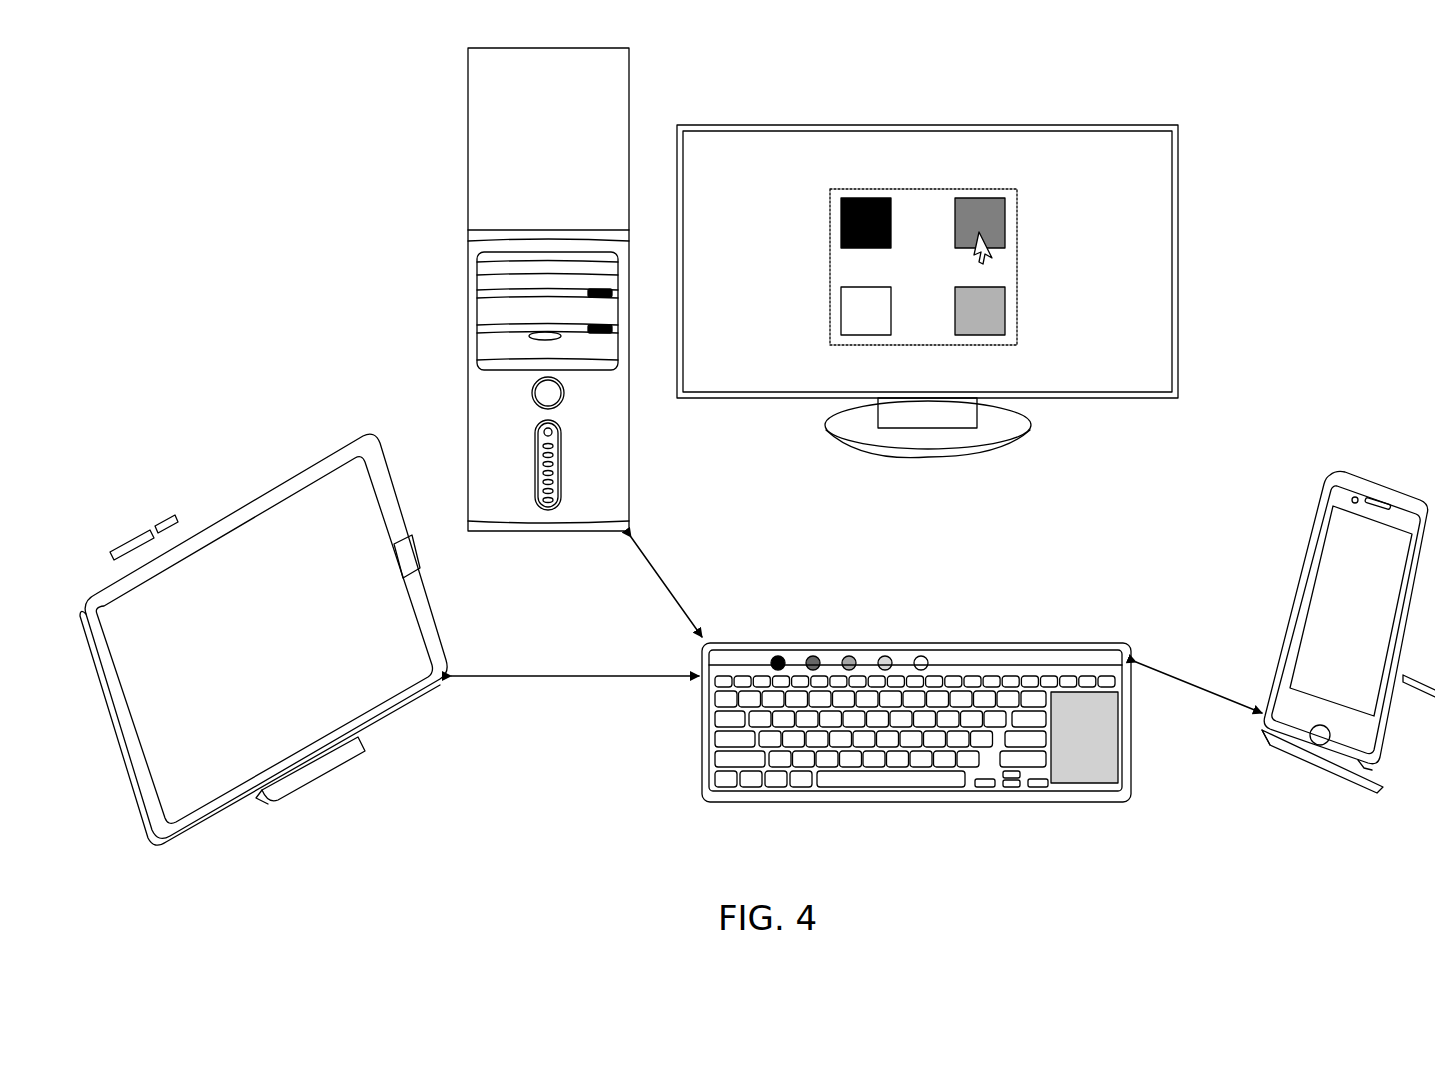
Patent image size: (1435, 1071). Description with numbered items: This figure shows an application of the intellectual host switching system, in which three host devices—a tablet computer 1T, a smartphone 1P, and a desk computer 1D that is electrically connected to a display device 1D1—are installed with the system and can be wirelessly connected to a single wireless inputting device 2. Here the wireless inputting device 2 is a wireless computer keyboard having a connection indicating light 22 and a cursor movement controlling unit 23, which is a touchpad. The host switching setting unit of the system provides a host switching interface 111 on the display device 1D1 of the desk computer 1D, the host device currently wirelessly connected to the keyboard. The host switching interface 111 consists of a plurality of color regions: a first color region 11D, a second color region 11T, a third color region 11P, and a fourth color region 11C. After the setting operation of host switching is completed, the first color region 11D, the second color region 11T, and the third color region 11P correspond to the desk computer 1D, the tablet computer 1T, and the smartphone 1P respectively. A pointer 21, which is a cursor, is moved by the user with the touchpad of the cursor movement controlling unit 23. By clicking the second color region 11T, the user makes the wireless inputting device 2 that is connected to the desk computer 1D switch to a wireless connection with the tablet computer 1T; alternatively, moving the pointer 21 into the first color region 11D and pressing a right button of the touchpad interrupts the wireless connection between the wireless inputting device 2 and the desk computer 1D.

The desk computer 1D is at (462, 231).
The display device 1D1 is at (1163, 122).
The host switching interface 111 is at (828, 262).
The third color region 11P is at (840, 205).
The first color region 11D is at (1005, 205).
The fourth color region 11C is at (840, 320).
The second color region 11T is at (1006, 325).
The pointer 21 is at (992, 262).
The wireless inputting device 2 is at (932, 715).
The connection indicating light 22 is at (810, 657).
The cursor movement controlling unit 23 is at (1081, 770).
The tablet computer 1T is at (345, 440).
The smartphone 1P is at (1328, 470).